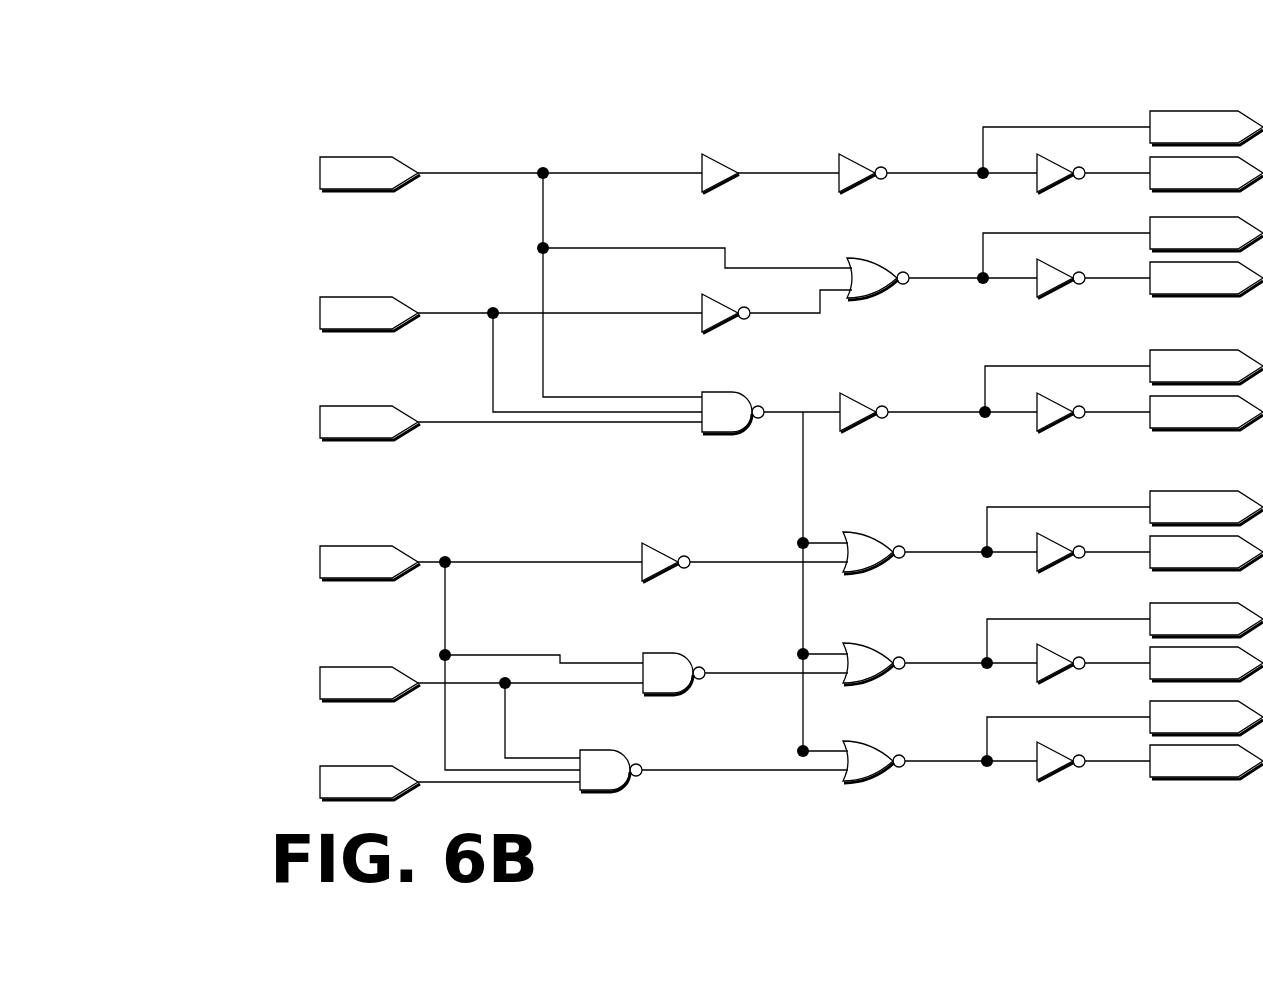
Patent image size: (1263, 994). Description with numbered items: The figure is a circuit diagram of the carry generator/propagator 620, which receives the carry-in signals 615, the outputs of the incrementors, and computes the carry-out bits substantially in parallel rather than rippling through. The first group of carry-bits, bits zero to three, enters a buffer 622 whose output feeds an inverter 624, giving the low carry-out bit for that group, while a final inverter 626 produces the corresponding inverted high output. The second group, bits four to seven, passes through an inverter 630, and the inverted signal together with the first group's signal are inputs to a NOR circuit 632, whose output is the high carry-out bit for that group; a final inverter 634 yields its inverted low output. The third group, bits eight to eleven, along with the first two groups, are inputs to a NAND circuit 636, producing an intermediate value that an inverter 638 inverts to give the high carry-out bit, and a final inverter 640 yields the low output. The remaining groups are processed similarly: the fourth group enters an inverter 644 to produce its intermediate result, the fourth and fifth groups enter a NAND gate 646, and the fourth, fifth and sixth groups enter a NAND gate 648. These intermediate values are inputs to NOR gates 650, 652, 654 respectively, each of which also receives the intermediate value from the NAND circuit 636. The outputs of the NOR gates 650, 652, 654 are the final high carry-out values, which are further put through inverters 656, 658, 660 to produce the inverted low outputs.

The carry-in signals 615 is at (319, 178).
The carry generator/propagator 620 is at (262, 106).
The buffer 622 is at (716, 159).
The inverter 624 is at (858, 159).
The final inverter 626 is at (1054, 161).
The inverter 630 is at (720, 299).
The NOR circuit 632 is at (882, 263).
The final inverter 634 is at (1054, 267).
The NAND circuit 636 is at (745, 394).
The inverter 638 is at (858, 398).
The final inverter 640 is at (1054, 398).
The inverter 644 is at (658, 548).
The NAND gate 646 is at (685, 656).
The NAND gate 648 is at (622, 754).
The NOR gate 650 is at (875, 537).
The NOR gate 652 is at (875, 649).
The NOR gate 654 is at (875, 745).
The inverter 656 is at (1056, 540).
The inverter 658 is at (1056, 651).
The inverter 660 is at (1056, 749).